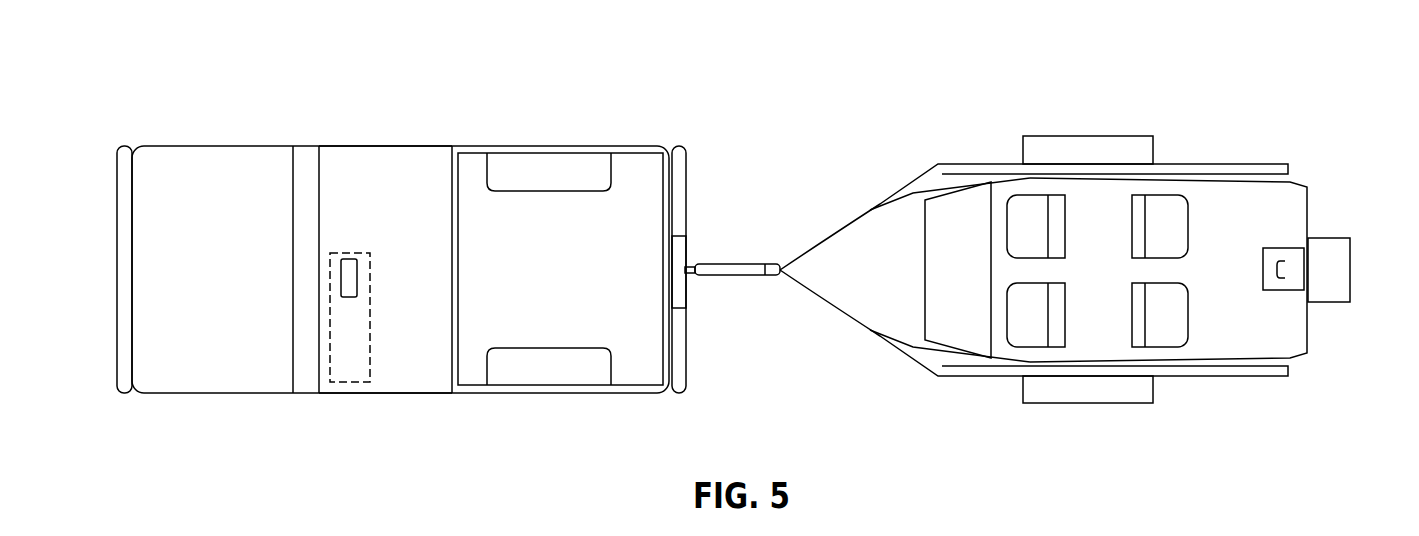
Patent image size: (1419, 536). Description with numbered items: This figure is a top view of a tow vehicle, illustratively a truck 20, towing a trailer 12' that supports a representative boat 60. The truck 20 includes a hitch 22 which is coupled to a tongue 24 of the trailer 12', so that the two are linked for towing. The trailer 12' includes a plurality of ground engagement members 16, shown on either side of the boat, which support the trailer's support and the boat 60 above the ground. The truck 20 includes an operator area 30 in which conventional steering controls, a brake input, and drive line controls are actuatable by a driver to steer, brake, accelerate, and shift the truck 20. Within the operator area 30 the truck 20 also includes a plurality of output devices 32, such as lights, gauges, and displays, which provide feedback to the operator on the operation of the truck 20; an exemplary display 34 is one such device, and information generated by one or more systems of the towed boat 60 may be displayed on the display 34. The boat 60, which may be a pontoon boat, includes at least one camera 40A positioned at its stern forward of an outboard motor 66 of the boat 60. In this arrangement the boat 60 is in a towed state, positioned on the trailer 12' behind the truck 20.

The trailer 12' is at (1089, 210).
The ground engagement members 16 is at (1060, 132).
The truck 20 is at (593, 125).
The hitch 22 is at (695, 281).
The tongue 24 is at (743, 257).
The operator area 30 is at (402, 205).
The output devices 32 is at (347, 386).
The display 34 is at (350, 258).
The camera 40A is at (1278, 248).
The boat 60 is at (1207, 222).
The outboard motor 66 is at (1330, 303).